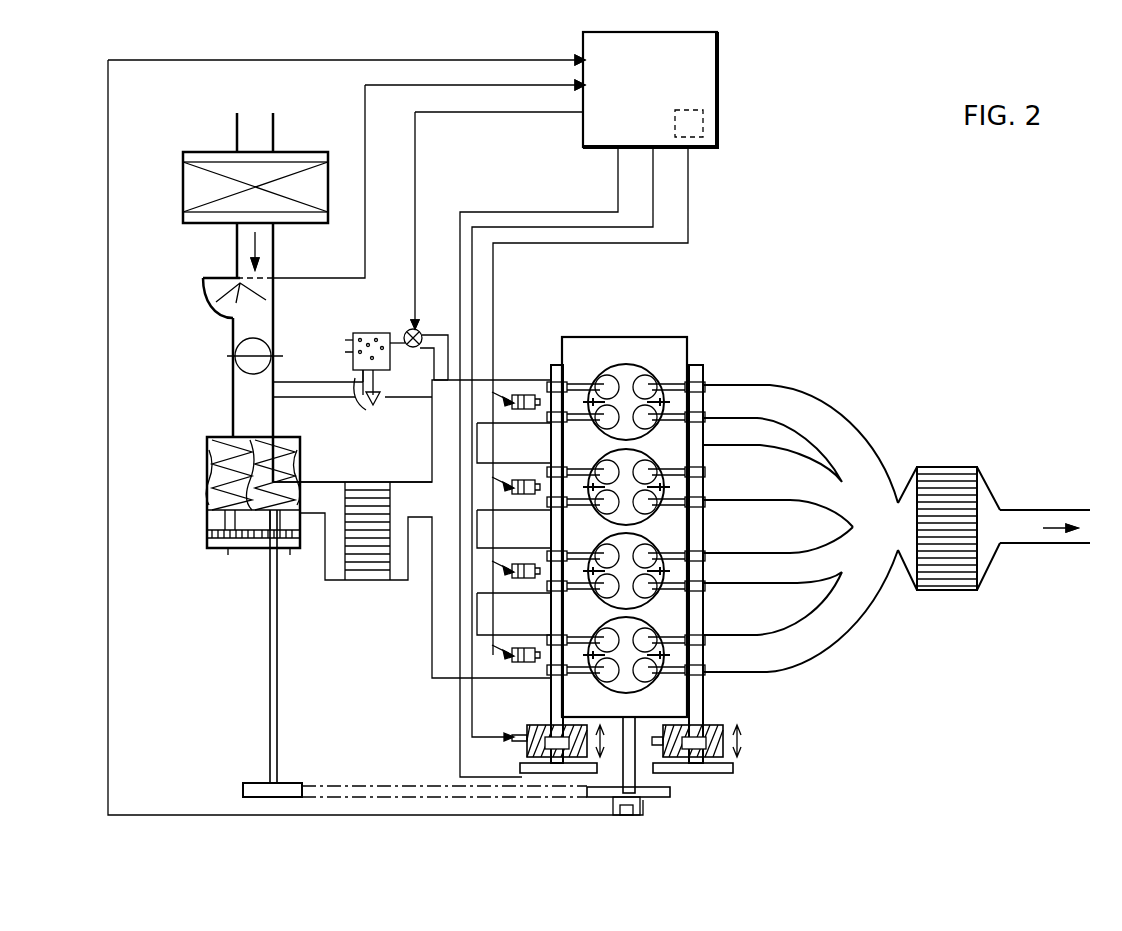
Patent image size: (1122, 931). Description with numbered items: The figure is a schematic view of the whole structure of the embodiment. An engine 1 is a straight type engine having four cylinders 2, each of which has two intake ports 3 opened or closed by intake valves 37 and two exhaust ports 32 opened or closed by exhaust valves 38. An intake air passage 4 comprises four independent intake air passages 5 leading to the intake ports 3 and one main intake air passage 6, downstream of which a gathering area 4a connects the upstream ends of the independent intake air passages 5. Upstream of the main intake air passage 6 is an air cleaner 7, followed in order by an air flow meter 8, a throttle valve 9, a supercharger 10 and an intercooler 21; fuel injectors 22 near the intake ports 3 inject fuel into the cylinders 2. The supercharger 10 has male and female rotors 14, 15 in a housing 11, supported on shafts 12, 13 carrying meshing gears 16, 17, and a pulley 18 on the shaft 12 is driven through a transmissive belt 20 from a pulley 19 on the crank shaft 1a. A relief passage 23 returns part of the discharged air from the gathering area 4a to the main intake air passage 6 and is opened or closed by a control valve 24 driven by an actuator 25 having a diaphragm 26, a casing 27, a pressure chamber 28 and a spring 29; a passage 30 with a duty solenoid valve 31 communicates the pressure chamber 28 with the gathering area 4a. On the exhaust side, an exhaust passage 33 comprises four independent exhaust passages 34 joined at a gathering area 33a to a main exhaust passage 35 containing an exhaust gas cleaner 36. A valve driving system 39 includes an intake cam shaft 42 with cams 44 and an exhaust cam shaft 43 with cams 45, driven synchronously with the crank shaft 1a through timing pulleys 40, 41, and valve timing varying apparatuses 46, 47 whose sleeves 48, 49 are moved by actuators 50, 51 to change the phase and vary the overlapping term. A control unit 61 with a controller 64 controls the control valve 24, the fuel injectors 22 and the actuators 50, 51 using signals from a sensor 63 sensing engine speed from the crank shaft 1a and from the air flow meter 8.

The engine 1 is at (656, 326).
The crank shaft 1a is at (623, 770).
The cylinder 2 is at (627, 365).
The intake port 3 is at (605, 432).
The intake air passage 4 is at (220, 396).
The gathering area 4a is at (432, 460).
The independent intake air passage 5 is at (510, 382).
The main intake air passage 6 is at (238, 250).
The air cleaner 7 is at (200, 152).
The air flow meter 8 is at (205, 288).
The throttle valve 9 is at (235, 362).
The supercharger 10 is at (195, 432).
The housing 11 is at (212, 484).
The shaft 12 is at (278, 665).
The shaft 13 is at (210, 515).
The male rotor 14 is at (290, 470).
The female rotor 15 is at (222, 475).
The gear 16 is at (290, 555).
The gear 17 is at (228, 555).
The pulley 18 is at (248, 783).
The pulley 19 is at (705, 795).
The transmissive belt 20 is at (390, 785).
The intercooler 21 is at (367, 570).
The fuel injector 22 is at (480, 428).
The relief passage 23 is at (315, 397).
The control valve 24 is at (364, 395).
The actuator 25 is at (343, 322).
The diaphragm 26 is at (356, 362).
The casing 27 is at (372, 405).
The pressure chamber 28 is at (360, 333).
The spring 29 is at (392, 335).
The passage 30 is at (421, 330).
The duty solenoid valve 31 is at (408, 350).
The exhaust port 32 is at (655, 385).
The exhaust passage 33 is at (1025, 508).
The gathering area 33a is at (868, 510).
The independent exhaust passage 34 is at (815, 407).
The main exhaust passage 35 is at (1030, 545).
The exhaust gas cleaner 36 is at (947, 590).
The intake valve 37 is at (600, 375).
The exhaust valve 38 is at (700, 387).
The valve driving system 39 is at (553, 362).
The timing pulley 40 is at (532, 775).
The timing pulley 41 is at (730, 775).
The intake cam shaft 42 is at (552, 365).
The exhaust cam shaft 43 is at (710, 440).
The cam 44 is at (553, 600).
The cam 45 is at (705, 392).
The intake valve timing varying apparatus 46 is at (500, 752).
The exhaust valve timing varying apparatus 47 is at (752, 745).
The sleeve 48 is at (578, 760).
The sleeve 49 is at (735, 725).
The actuator 50 is at (495, 737).
The actuator 51 is at (660, 795).
The control unit 61 is at (717, 50).
The sensor 63 is at (655, 797).
The controller 64 is at (703, 123).